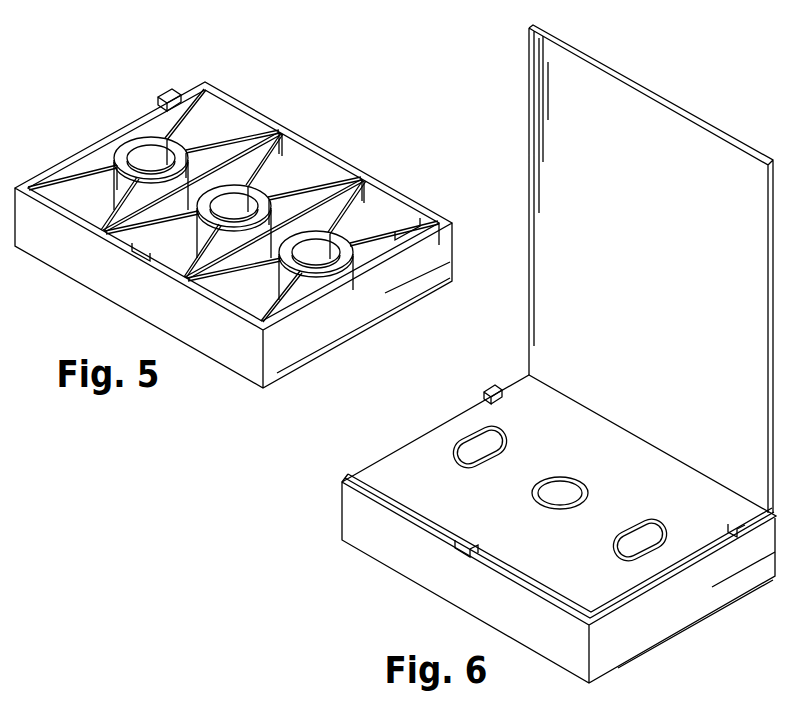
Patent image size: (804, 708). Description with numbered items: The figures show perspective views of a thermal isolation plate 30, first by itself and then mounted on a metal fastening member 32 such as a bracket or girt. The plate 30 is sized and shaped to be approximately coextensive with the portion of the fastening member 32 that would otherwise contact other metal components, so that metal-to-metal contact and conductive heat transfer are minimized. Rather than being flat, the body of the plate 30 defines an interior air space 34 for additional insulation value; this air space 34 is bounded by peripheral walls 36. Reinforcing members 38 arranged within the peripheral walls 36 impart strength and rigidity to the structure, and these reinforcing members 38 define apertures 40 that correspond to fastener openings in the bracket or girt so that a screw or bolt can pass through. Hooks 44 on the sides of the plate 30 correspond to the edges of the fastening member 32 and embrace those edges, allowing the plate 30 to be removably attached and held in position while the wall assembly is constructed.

In FIG. 5, the plate 30 is at (453, 244).
In FIG. 6, the plate 30 is at (342, 513).
In FIG. 6, the metal fastening member 32 is at (528, 107).
In FIG. 5, the interior air space 34 is at (265, 142).
In FIG. 5, the peripheral walls 36 is at (84, 146).
In FIG. 6, the peripheral walls 36 is at (405, 560).
In FIG. 5, the reinforcing members 38 is at (68, 175).
In FIG. 5, the aperture 40 is at (148, 153).
In FIG. 6, the aperture 40 is at (470, 452).
In FIG. 5, the hooks 44 is at (167, 86).
In FIG. 6, the hooks 44 is at (496, 378).